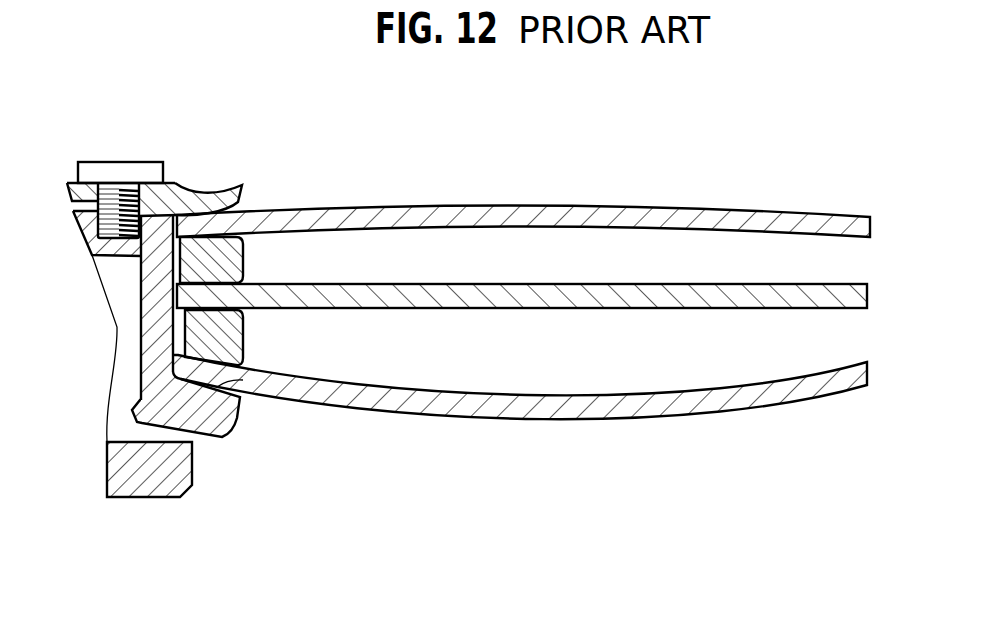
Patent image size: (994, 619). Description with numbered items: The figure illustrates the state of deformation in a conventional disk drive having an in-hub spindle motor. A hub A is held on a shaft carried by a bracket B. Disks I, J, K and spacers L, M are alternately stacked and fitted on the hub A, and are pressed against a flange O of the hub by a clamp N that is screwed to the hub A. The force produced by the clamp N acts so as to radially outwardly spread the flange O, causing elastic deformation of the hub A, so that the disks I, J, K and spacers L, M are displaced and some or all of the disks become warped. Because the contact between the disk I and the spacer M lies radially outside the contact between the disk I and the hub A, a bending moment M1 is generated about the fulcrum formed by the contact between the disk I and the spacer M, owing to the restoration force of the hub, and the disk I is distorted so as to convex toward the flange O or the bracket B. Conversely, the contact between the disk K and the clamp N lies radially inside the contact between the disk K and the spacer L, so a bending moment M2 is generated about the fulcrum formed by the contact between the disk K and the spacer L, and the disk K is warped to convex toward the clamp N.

The bending moment M2 is at (148, 237).
The clamp N is at (242, 186).
The hub A is at (155, 310).
The disk K is at (778, 217).
The spacer L is at (227, 260).
The disk J is at (828, 293).
The spacer M is at (225, 340).
The disk I is at (843, 380).
The bending moment M1 is at (178, 336).
The flange O is at (217, 387).
The bracket B is at (155, 497).